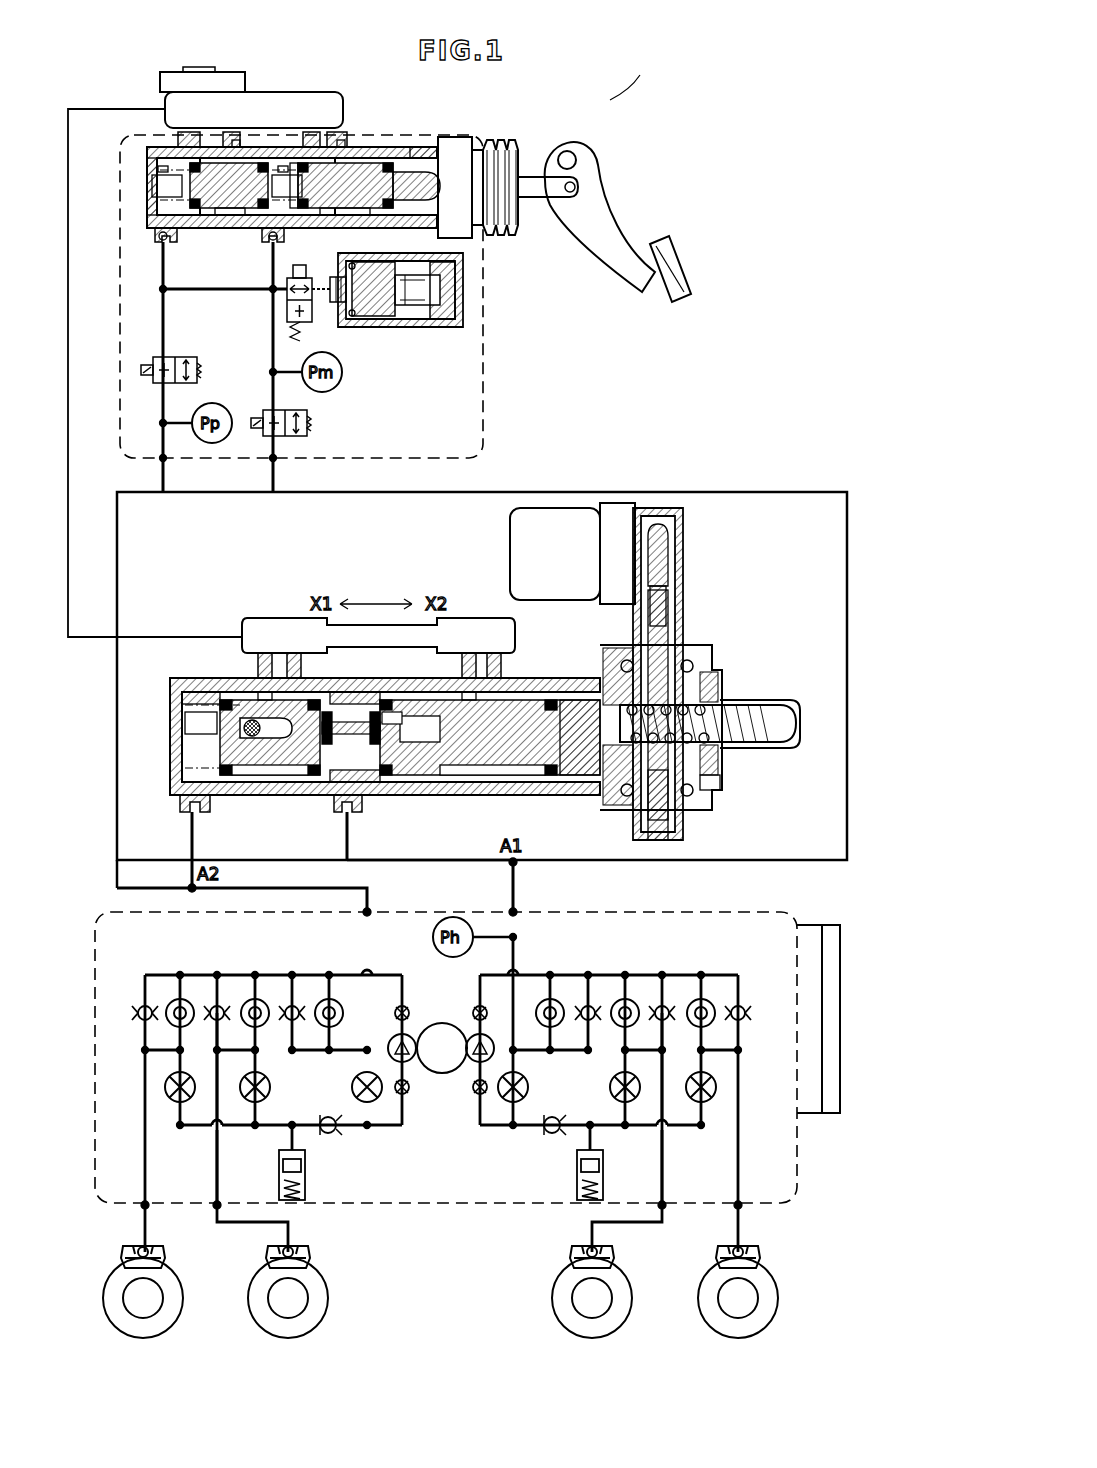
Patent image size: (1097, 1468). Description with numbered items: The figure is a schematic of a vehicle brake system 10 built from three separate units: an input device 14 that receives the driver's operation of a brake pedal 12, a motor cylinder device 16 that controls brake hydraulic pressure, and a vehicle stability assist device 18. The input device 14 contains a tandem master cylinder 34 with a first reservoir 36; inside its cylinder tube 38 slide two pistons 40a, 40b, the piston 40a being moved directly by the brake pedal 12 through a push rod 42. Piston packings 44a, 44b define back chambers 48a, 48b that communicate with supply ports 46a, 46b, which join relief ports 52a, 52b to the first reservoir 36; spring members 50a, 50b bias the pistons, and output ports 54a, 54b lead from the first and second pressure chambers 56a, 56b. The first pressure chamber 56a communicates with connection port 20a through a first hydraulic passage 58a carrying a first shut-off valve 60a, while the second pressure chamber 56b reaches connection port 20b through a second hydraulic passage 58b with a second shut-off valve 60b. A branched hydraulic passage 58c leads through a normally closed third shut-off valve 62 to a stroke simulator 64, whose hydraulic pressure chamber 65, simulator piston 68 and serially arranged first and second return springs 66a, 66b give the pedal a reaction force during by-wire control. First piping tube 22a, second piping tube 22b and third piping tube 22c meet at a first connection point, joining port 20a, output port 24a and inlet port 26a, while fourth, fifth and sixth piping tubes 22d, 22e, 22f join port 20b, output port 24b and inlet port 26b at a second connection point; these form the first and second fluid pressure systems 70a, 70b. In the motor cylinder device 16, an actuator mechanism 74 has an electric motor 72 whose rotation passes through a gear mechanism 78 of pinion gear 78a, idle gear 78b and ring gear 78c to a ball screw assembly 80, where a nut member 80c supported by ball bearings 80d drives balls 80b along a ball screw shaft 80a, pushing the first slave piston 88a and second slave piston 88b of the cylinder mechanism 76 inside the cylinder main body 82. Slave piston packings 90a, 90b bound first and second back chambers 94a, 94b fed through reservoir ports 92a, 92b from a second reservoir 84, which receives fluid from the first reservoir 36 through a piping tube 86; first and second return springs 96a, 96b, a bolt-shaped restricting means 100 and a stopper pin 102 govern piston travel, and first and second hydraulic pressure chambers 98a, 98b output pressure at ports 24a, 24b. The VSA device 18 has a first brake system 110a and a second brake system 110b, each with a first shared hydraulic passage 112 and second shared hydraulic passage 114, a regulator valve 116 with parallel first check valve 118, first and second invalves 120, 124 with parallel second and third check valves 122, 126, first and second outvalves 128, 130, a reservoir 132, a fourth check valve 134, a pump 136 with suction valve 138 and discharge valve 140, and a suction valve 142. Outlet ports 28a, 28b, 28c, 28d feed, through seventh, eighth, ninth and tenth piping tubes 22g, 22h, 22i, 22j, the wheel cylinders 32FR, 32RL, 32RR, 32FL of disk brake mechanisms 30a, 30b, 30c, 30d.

The vehicle brake system 10 is at (614, 103).
The brake pedal 12 is at (690, 268).
The input device 14 is at (485, 356).
The motor cylinder device 16 is at (703, 570).
The vehicle stability assist device 18 is at (690, 912).
The connection port 20a is at (272, 466).
The connection port 20b is at (167, 466).
The first piping tube 22a is at (848, 590).
The second piping tube 22b is at (405, 856).
The third piping tube 22c is at (516, 888).
The fourth piping tube 22d is at (117, 665).
The fifth piping tube 22e is at (185, 838).
The sixth piping tube 22f is at (307, 880).
The seventh piping tube 22g is at (742, 1248).
The eighth piping tube 22h is at (590, 1236).
The ninth piping tube 22i is at (292, 1236).
The tenth piping tube 22j is at (140, 1248).
The output port 24a is at (352, 806).
The output port 24b is at (196, 806).
The inlet port 26a is at (518, 910).
The inlet port 26b is at (372, 910).
The first outlet port 28a is at (742, 1212).
The second outlet port 28b is at (666, 1210).
The third outlet port 28c is at (215, 1210).
The fourth outlet port 28d is at (140, 1210).
The disk brake mechanism 30a is at (783, 1330).
The disk brake mechanism 30b is at (637, 1330).
The disk brake mechanism 30c is at (333, 1330).
The disk brake mechanism 30d is at (188, 1330).
The wheel cylinder 32FL is at (168, 1272).
The wheel cylinder 32RR is at (313, 1272).
The wheel cylinder 32RL is at (617, 1272).
The wheel cylinder 32FR is at (763, 1272).
The tandem master cylinder 34 is at (380, 145).
The first reservoir 36 is at (258, 92).
The cylinder tube 38 is at (408, 145).
The piston 40a is at (345, 160).
The piston 40b is at (202, 158).
The push rod 42 is at (430, 186).
The piston packing 44a is at (390, 212).
The piston packing 44b is at (335, 212).
The supply port 46a is at (340, 140).
The supply port 46b is at (236, 140).
The back chamber 48a is at (360, 216).
The back chamber 48b is at (230, 216).
The spring member 50a is at (292, 163).
The spring member 50b is at (152, 147).
The relief port 52a is at (283, 166).
The relief port 52b is at (168, 166).
The output port 54a is at (277, 241).
The output port 54b is at (158, 240).
The first pressure chamber 56a is at (332, 185).
The second pressure chamber 56b is at (210, 185).
The first hydraulic passage 58a is at (273, 358).
The second hydraulic passage 58b is at (160, 292).
The branched hydraulic passage 58c is at (210, 320).
The first shut-off valve 60a is at (300, 436).
The second shut-off valve 60b is at (178, 357).
The third shut-off valve 62 is at (312, 318).
The stroke simulator 64 is at (476, 272).
The hydraulic pressure chamber 65 is at (352, 318).
The first return spring 66a is at (440, 320).
The second return spring 66b is at (405, 320).
The simulator piston 68 is at (368, 318).
The first fluid pressure system 70a is at (594, 467).
The second fluid pressure system 70b is at (98, 720).
The electric motor 72 is at (510, 545).
The actuator mechanism 74 is at (733, 654).
The cylinder mechanism 76 is at (459, 805).
The gear mechanism 78 is at (678, 600).
The pinion gear 78a is at (660, 524).
The idle gear 78b is at (670, 612).
The ring gear 78c is at (648, 812).
The ball screw assembly 80 is at (782, 705).
The ball screw shaft 80a is at (735, 748).
The balls 80b is at (700, 698).
The nut member 80c is at (720, 792).
The ball bearings 80d is at (692, 800).
The cylinder main body 82 is at (562, 695).
The second reservoir 84 is at (460, 618).
The piping tube 86 is at (68, 362).
The first slave piston 88a is at (510, 778).
The second slave piston 88b is at (290, 776).
The slave piston packing 90a is at (550, 778).
The slave piston packing 90b is at (395, 778).
The reservoir port 92a is at (500, 655).
The reservoir port 92b is at (280, 692).
The first back chamber 94a is at (490, 778).
The second back chamber 94b is at (270, 778).
The first return spring 96a is at (375, 782).
The second return spring 96b is at (195, 690).
The first hydraulic pressure chamber 98a is at (379, 735).
The second hydraulic pressure chamber 98b is at (201, 723).
The restricting means 100 is at (370, 720).
The stopper pin 102 is at (245, 700).
The first brake system 110a is at (748, 962).
The second brake system 110b is at (150, 954).
The first shared hydraulic passage 112 is at (660, 980).
The second shared hydraulic passage 114 is at (665, 1130).
The regulator valve 116 is at (548, 998).
The first check valve 118 is at (590, 1003).
The first invalve 120 is at (710, 998).
The second check valve 122 is at (745, 1005).
The second invalve 124 is at (632, 998).
The third check valve 126 is at (668, 1003).
The first outvalve 128 is at (704, 1102).
The second outvalve 130 is at (640, 1078).
The reservoir 132 is at (577, 1180).
The fourth check valve 134 is at (556, 1134).
The pump 136 is at (420, 1062).
The suction valve 138 is at (418, 1068).
The discharge valve 140 is at (465, 1010).
The suction valve 142 is at (486, 1100).